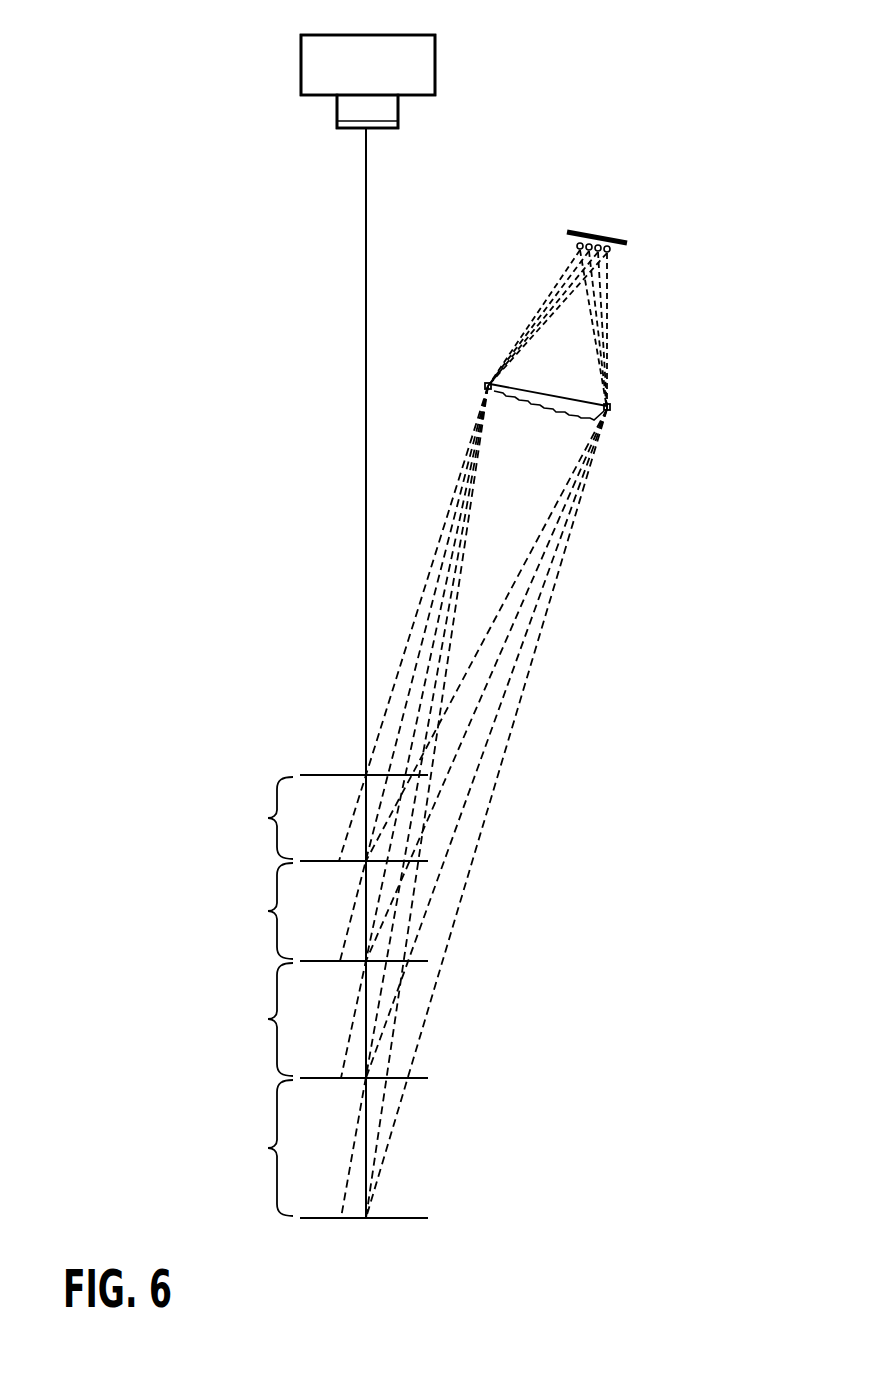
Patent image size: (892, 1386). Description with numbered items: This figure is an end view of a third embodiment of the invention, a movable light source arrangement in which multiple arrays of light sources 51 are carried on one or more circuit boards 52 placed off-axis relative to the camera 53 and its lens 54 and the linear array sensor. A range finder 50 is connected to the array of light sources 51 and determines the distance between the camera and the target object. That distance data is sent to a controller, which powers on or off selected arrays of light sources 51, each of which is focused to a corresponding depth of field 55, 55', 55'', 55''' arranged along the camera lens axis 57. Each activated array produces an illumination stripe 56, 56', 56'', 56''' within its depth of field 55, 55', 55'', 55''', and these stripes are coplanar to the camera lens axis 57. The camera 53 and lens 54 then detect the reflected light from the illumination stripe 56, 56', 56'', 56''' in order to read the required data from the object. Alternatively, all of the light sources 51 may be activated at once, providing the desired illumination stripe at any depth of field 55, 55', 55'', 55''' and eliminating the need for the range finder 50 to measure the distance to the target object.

The range finder 50 is at (337, 127).
The light sources 51 is at (611, 251).
The circuit board 52 is at (598, 232).
The camera 53 is at (435, 50).
The lens 54 is at (378, 107).
The depth of field 55 is at (290, 1148).
The depth of field 55' is at (290, 1018).
The depth of field 55'' is at (290, 910).
The depth of field 55''' is at (290, 817).
The illumination stripe 56 is at (482, 802).
The illumination stripe 56' is at (474, 802).
The illumination stripe 56'' is at (474, 732).
The illumination stripe 56''' is at (473, 673).
The camera lens axis 57 is at (366, 320).